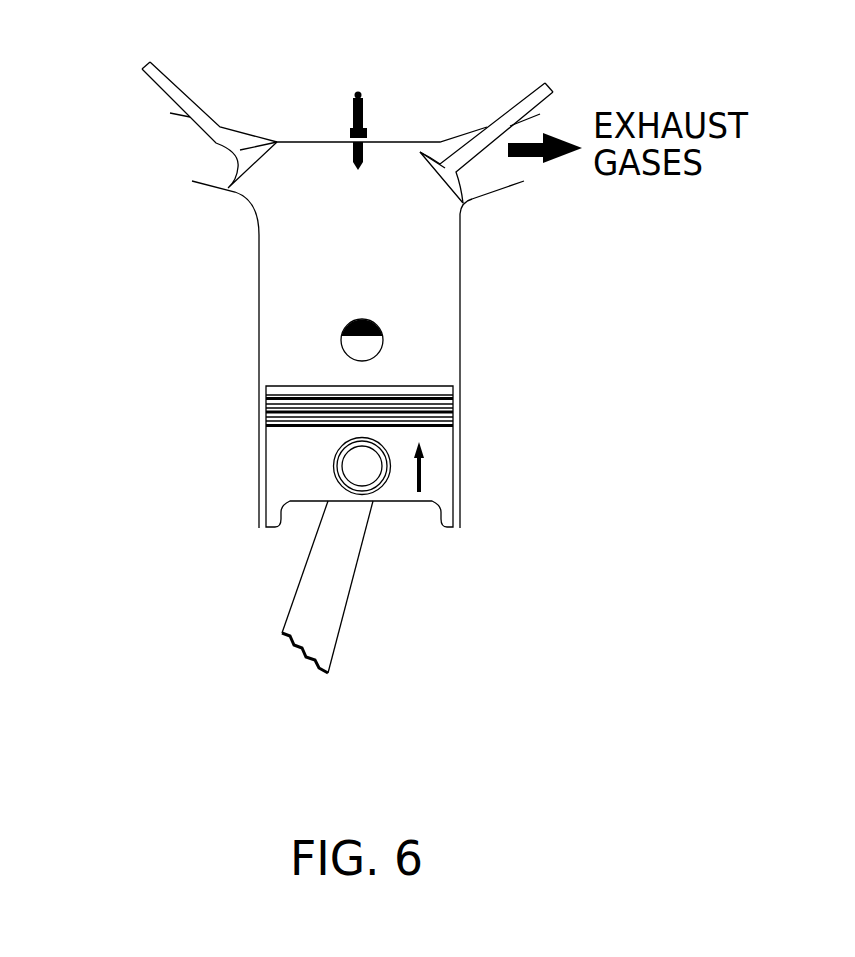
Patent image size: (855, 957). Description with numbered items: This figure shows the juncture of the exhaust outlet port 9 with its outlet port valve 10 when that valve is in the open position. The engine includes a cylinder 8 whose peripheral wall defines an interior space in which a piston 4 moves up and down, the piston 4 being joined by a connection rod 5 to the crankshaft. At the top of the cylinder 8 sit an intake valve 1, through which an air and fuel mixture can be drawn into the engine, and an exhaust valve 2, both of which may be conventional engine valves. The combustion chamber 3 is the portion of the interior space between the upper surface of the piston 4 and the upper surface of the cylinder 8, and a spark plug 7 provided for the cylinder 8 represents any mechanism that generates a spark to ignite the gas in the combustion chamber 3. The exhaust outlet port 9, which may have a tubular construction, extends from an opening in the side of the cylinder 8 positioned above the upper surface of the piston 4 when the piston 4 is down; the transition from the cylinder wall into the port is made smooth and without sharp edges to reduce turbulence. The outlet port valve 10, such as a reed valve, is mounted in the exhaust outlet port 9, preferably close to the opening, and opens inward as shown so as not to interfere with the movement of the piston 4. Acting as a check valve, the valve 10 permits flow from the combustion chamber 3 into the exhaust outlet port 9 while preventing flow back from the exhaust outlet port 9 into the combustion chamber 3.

The intake valve 1 is at (214, 145).
The exhaust valve 2 is at (507, 132).
The combustion chamber 3 is at (320, 210).
The piston 4 is at (298, 348).
The connection rod 5 is at (332, 578).
The spark plug 7 is at (366, 96).
The cylinder 8 is at (262, 415).
The exhaust outlet port 9 is at (382, 348).
The outlet port valve 10 is at (368, 322).